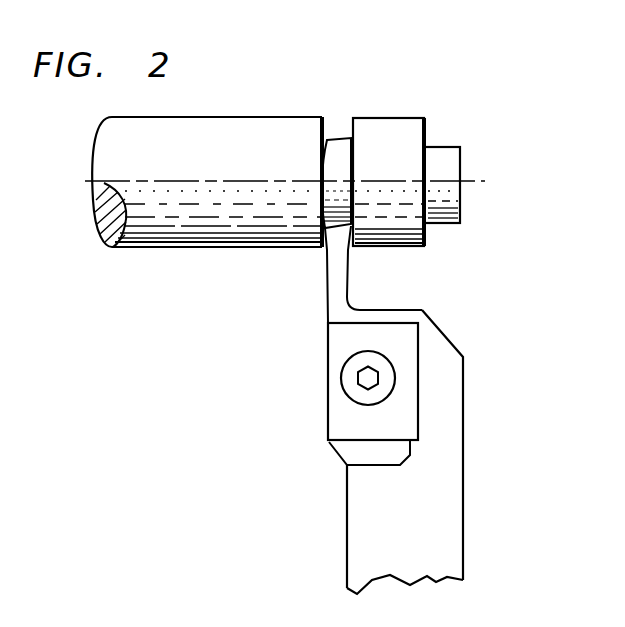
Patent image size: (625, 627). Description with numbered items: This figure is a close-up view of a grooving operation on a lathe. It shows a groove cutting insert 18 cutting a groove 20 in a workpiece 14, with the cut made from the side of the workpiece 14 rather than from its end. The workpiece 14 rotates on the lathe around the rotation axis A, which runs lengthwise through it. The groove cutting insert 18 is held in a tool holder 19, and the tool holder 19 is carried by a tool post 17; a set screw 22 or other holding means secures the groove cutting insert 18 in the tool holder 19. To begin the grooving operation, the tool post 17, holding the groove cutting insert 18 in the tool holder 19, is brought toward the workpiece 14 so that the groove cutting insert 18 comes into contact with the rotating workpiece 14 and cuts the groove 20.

The workpiece 14 is at (207, 140).
The tool post 17 is at (446, 452).
The groove cutting insert 18 is at (329, 230).
The tool holder 19 is at (407, 372).
The groove 20 is at (393, 148).
The set screw 22 is at (315, 378).
The rotation axis A is at (503, 152).